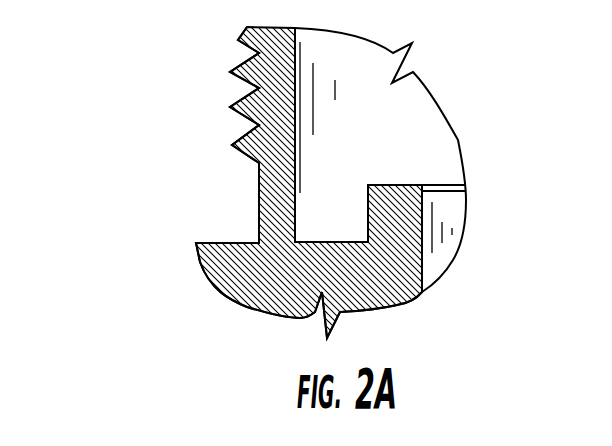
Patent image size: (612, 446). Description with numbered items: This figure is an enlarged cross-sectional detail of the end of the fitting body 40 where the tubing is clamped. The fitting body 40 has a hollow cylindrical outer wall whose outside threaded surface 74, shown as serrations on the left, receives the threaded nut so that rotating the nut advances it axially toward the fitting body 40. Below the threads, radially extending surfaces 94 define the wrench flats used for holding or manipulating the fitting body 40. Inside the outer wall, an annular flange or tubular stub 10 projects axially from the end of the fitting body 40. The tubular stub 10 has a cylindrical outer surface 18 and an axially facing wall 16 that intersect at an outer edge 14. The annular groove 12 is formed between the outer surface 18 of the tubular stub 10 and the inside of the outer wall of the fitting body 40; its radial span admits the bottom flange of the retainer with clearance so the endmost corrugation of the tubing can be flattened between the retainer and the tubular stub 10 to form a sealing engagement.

The fitting body 40 is at (158, 133).
The outside threaded surface 74 is at (238, 102).
The radially extending surfaces 94 is at (213, 242).
The annular groove 12 is at (339, 225).
The annular flange or tubular stub 10 is at (409, 227).
The outer edge 14 is at (368, 185).
The axially facing wall 16 is at (400, 185).
The cylindrical outer surface 18 is at (363, 203).